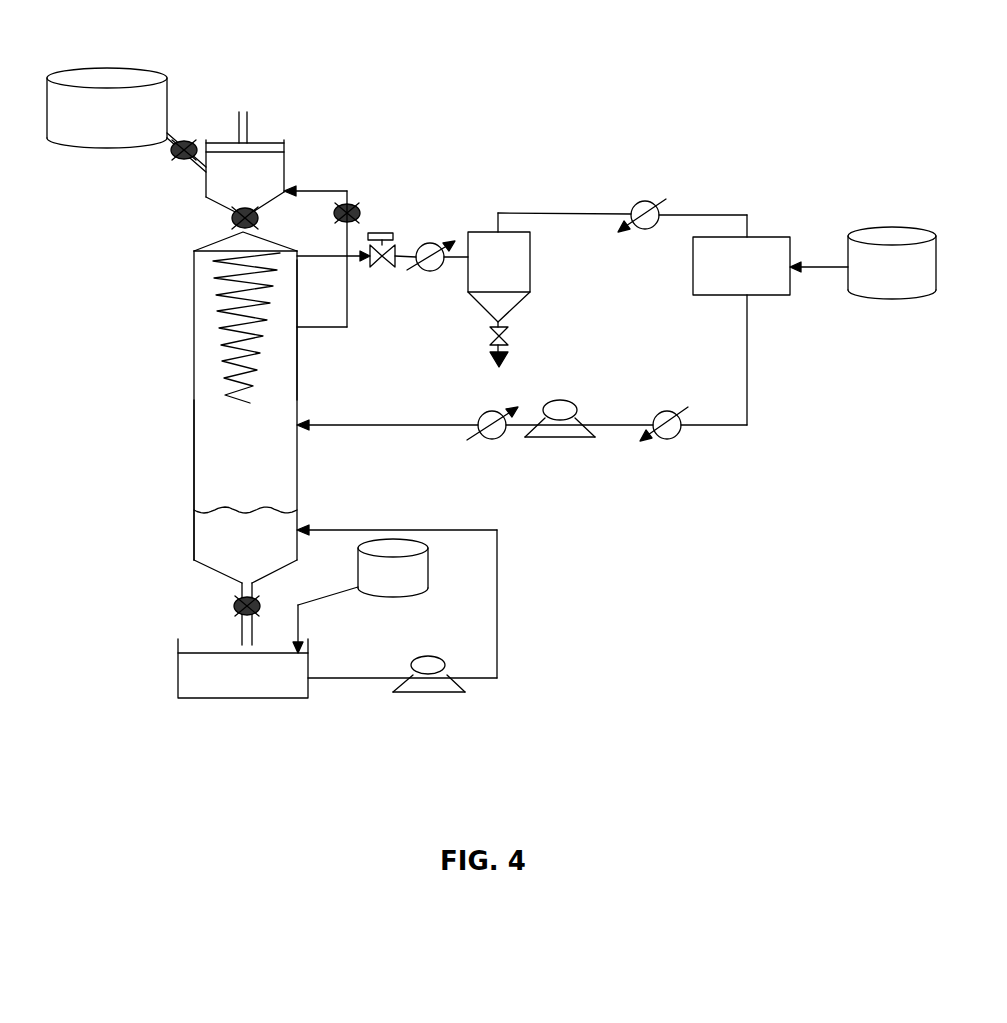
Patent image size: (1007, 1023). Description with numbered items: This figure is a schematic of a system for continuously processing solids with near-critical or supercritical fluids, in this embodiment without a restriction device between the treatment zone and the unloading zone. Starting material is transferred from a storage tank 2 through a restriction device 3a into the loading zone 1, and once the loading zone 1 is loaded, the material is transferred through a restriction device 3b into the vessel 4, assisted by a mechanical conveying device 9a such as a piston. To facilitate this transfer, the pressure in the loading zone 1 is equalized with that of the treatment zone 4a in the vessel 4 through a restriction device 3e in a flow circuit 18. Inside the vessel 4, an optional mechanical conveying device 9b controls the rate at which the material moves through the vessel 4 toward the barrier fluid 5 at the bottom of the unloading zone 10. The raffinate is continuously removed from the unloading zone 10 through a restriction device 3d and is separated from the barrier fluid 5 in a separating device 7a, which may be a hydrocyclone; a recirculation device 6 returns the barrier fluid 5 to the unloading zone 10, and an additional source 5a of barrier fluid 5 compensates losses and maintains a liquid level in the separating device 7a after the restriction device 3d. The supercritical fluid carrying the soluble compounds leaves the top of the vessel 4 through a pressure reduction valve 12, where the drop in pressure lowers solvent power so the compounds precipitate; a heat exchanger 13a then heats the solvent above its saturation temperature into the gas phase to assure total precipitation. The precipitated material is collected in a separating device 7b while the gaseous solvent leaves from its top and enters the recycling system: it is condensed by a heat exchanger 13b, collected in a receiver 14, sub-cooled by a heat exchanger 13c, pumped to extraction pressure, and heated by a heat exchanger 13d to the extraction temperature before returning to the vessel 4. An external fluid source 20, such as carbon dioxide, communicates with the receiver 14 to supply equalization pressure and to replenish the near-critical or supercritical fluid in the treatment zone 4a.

The loading zone 1 is at (292, 166).
The storage tank 2 is at (107, 88).
The restriction device 3a is at (193, 140).
The restriction device 3b is at (225, 225).
The restriction device 3d is at (257, 605).
The restriction device 3e is at (352, 205).
The vessel 4 is at (183, 370).
The treatment zone 4a is at (280, 387).
The barrier fluid 5 is at (245, 537).
The additional source of barrier fluid 5a is at (417, 568).
The recirculation device 6 is at (412, 665).
The separating device 7a is at (178, 632).
The separating device 7b is at (543, 297).
The mechanical conveying device 9a is at (263, 132).
The mechanical conveying device 9b is at (210, 305).
The unloading zone 10 is at (182, 475).
The pressure reduction valve 12 is at (375, 273).
The heat exchanger 13a is at (432, 277).
The heat exchanger 13b is at (645, 235).
The heat exchanger 13c is at (664, 449).
The heat exchanger 13d is at (474, 449).
The receiver 14 is at (741, 266).
The flow circuit 18 is at (348, 237).
The external fluid source 20 is at (892, 263).